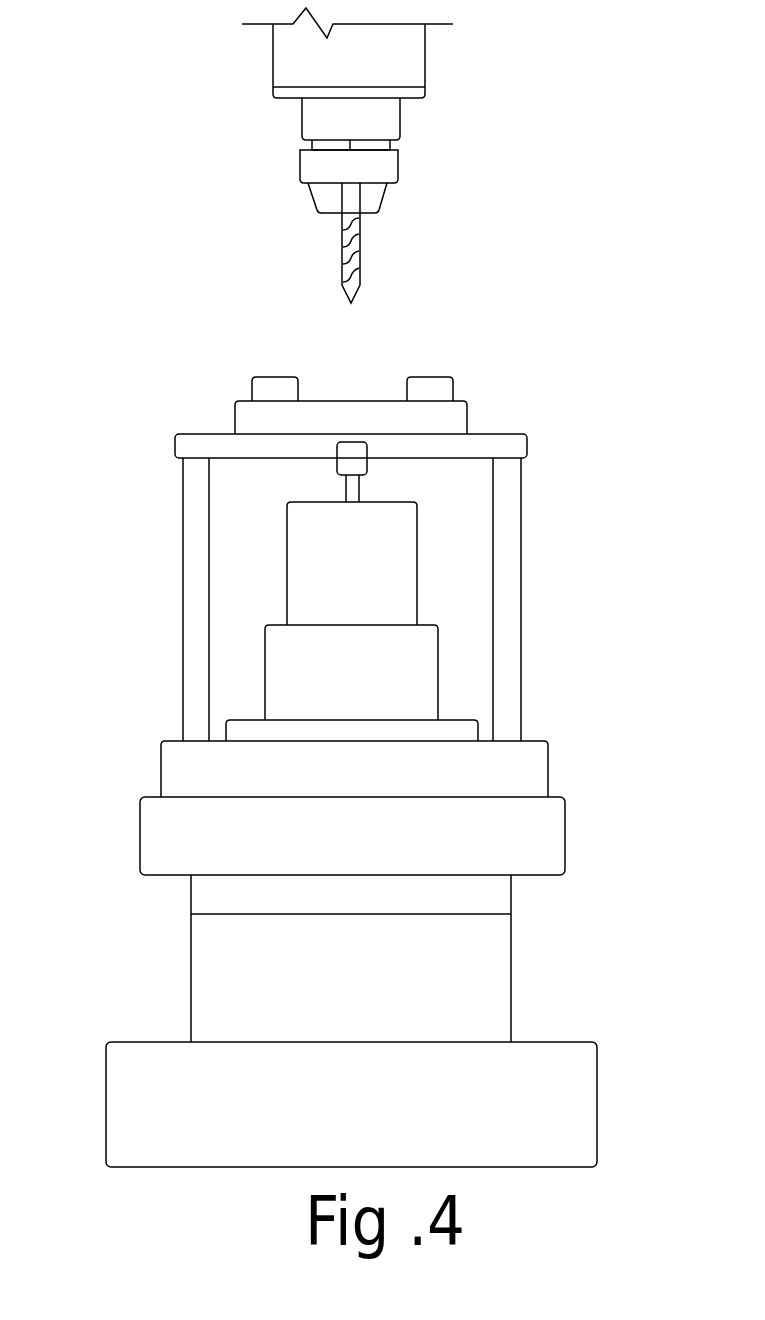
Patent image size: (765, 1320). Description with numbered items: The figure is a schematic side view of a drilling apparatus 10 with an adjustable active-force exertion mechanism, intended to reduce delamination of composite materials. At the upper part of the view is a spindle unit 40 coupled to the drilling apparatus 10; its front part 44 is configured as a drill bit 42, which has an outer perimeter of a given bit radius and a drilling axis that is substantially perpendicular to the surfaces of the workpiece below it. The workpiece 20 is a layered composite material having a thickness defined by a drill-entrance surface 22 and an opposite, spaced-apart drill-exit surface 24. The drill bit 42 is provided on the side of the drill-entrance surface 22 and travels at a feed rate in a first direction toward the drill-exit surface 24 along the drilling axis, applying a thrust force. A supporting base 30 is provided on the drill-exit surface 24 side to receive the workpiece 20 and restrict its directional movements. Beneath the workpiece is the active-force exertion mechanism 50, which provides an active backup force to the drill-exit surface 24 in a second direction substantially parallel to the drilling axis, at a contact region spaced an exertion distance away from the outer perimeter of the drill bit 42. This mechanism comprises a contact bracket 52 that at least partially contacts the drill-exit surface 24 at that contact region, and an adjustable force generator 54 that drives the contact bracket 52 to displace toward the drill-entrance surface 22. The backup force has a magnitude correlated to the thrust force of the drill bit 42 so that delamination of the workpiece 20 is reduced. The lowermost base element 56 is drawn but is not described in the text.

The drilling apparatus 10 is at (104, 168).
The workpiece 20 is at (446, 419).
The drill-entrance surface 22 is at (238, 400).
The drill-exit surface 24 is at (272, 435).
The supporting base 30 is at (195, 631).
The spindle unit 40 is at (382, 125).
The drill bit 42 is at (368, 284).
The front part 44 is at (383, 173).
The active-force exertion mechanism 50 is at (462, 1001).
The contact bracket 52 is at (355, 467).
The adjustable force generator 54 is at (387, 602).
The base 56 is at (500, 1115).